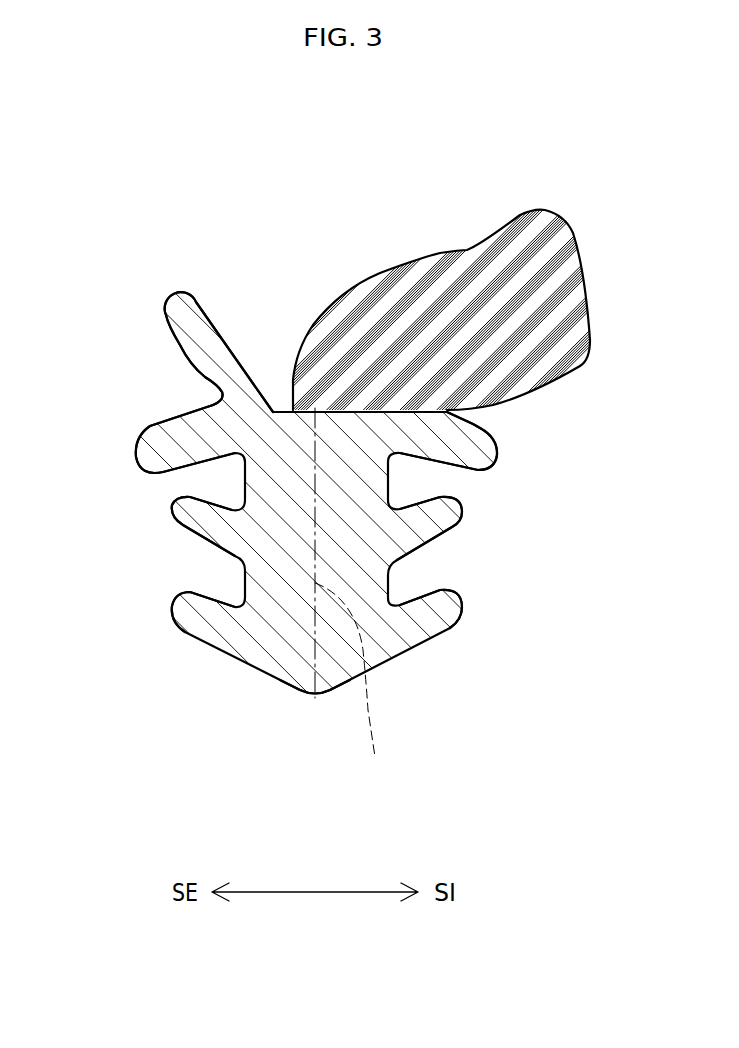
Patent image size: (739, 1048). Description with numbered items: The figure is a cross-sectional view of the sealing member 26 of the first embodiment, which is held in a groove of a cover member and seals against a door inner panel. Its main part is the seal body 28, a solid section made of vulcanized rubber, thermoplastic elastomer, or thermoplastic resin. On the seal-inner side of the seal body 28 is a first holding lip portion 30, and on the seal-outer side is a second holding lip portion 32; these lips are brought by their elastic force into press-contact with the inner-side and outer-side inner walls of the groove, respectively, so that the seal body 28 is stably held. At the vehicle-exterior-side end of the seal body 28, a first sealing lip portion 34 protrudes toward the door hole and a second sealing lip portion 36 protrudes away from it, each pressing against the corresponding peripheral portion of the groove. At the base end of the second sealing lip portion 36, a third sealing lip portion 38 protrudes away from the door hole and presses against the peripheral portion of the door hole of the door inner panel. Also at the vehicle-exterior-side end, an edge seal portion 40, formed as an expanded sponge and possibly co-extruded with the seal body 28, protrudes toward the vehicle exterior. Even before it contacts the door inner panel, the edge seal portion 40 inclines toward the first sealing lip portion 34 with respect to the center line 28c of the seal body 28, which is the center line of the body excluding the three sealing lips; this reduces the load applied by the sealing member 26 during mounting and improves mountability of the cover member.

The sealing member 26 is at (351, 184).
The seal body 28 is at (284, 690).
The center line 28c is at (354, 692).
The first holding lip portion 30 is at (463, 598).
The second holding lip portion 32 is at (173, 602).
The first sealing lip portion 34 is at (493, 437).
The second sealing lip portion 36 is at (143, 428).
The third sealing lip portion 38 is at (178, 298).
The edge seal portion 40 is at (466, 250).